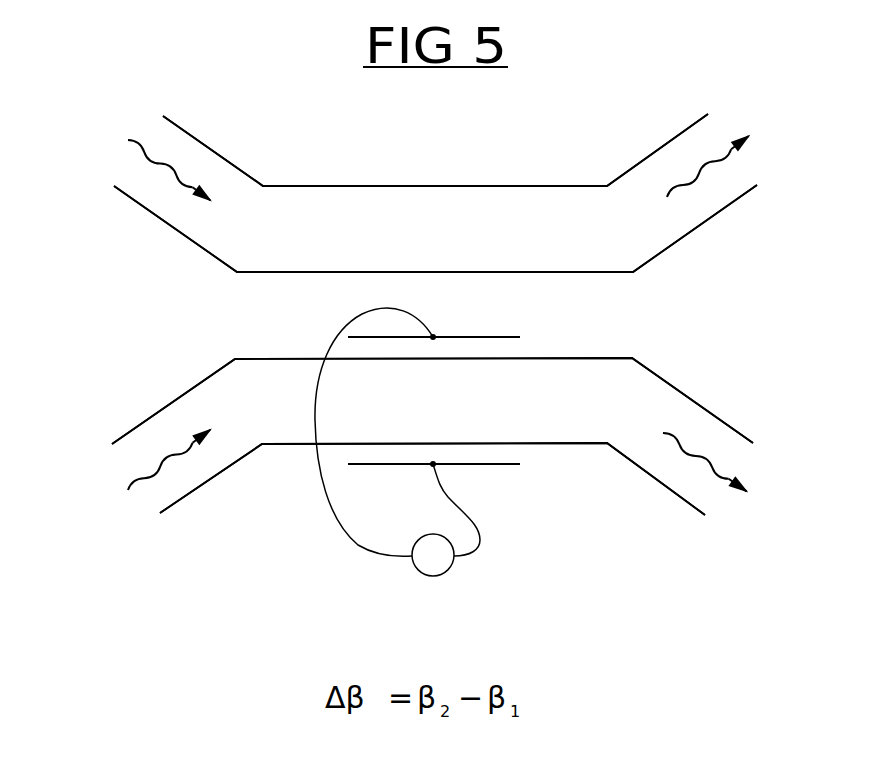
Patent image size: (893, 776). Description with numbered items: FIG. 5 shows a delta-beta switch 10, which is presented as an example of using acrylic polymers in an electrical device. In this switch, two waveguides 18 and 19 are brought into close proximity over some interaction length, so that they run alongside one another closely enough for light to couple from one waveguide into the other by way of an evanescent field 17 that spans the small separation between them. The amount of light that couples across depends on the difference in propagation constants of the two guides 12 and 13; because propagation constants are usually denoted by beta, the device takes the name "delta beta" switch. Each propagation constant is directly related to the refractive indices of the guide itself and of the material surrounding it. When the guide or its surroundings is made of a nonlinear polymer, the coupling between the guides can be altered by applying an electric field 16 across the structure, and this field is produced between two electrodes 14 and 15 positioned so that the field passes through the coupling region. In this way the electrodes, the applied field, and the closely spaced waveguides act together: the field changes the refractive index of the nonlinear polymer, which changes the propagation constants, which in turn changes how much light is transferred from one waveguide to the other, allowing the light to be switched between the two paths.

The delta-beta switch 10 is at (473, 184).
The guide 12 is at (325, 186).
The guide 13 is at (550, 443).
The electrode 14 is at (493, 337).
The electrode 15 is at (485, 464).
The electric field 16 is at (433, 576).
The evanescent field 17 is at (152, 319).
The waveguide 18 is at (124, 486).
The waveguide 19 is at (124, 144).